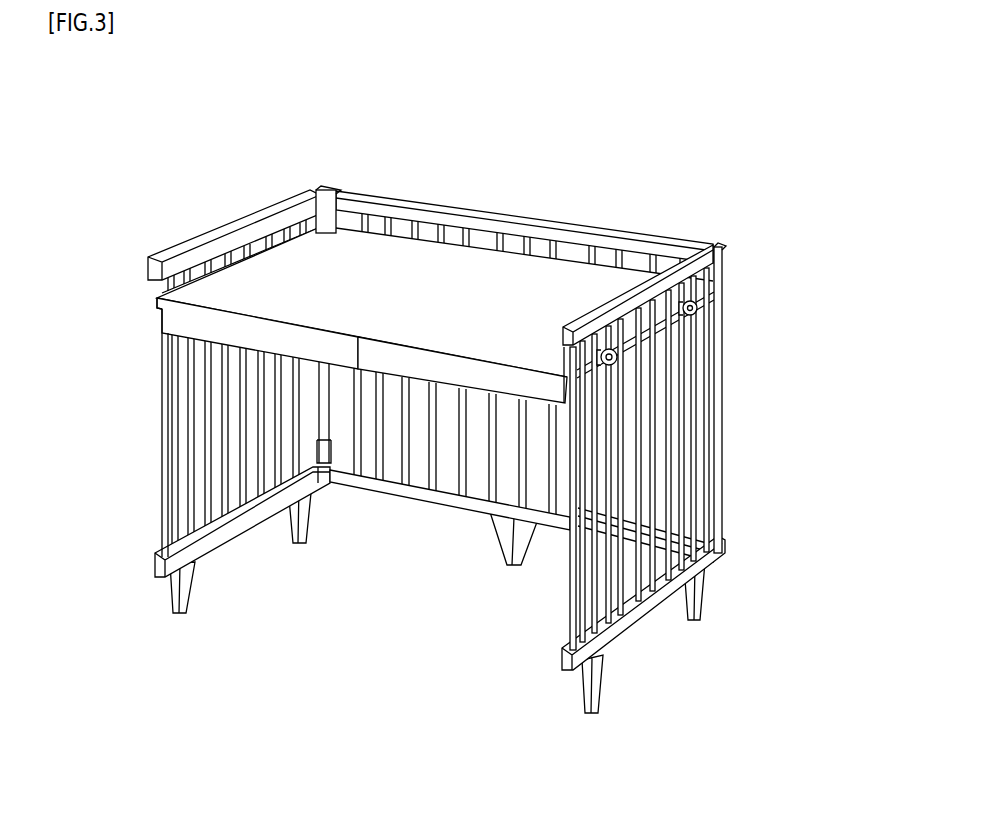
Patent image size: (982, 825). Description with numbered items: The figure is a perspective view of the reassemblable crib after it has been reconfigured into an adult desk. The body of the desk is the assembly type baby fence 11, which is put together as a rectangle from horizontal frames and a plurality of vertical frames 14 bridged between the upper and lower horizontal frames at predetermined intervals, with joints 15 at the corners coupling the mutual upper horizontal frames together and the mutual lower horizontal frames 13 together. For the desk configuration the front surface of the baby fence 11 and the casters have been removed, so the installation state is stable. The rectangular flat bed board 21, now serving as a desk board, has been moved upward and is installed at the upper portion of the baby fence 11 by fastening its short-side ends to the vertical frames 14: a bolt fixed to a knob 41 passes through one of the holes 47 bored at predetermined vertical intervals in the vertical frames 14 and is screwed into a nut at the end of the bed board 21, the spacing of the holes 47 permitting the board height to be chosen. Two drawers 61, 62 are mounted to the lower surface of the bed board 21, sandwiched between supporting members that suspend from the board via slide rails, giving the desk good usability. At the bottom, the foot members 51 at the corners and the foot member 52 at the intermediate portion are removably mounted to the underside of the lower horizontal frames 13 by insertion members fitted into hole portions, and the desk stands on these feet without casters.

The baby fence 11 is at (467, 177).
The lower horizontal frame 13 is at (619, 634).
The vertical frame 14 is at (722, 378).
The joint 15 is at (339, 188).
The bed board 21 is at (538, 268).
The knob 41 is at (617, 356).
The hole 47 is at (685, 470).
The foot member 51 is at (172, 593).
The foot member 52 is at (512, 560).
The drawer 61 is at (175, 320).
The drawer 62 is at (457, 377).